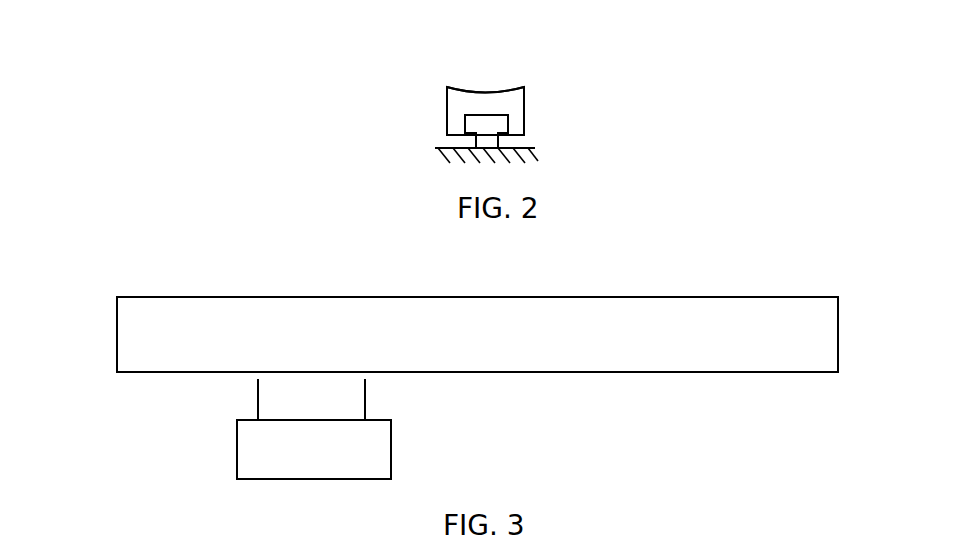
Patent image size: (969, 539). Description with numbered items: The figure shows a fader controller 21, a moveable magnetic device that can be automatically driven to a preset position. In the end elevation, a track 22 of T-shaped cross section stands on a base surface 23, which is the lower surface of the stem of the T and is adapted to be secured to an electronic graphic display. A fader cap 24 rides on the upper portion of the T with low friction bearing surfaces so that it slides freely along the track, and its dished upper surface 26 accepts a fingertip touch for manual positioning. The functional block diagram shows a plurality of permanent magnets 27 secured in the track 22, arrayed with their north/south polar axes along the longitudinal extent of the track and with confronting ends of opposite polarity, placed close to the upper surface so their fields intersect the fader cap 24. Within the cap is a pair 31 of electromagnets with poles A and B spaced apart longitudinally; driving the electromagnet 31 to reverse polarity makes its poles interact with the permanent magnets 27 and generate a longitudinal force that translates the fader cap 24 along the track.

In FIG. 2, the fader controller 21 is at (404, 87).
In FIG. 3, the fader controller 21 is at (213, 280).
In FIG. 2, the track 22 is at (500, 125).
In FIG. 3, the track 22 is at (118, 335).
In FIG. 2, the base surface 23 is at (475, 157).
In FIG. 2, the fader cap 24 is at (525, 93).
In FIG. 3, the fader cap 24 is at (237, 442).
In FIG. 2, the dished upper surface 26 is at (491, 87).
In FIG. 3, the permanent magnets 27 is at (215, 313).
In FIG. 3, the pair of electromagnets 31 is at (328, 448).